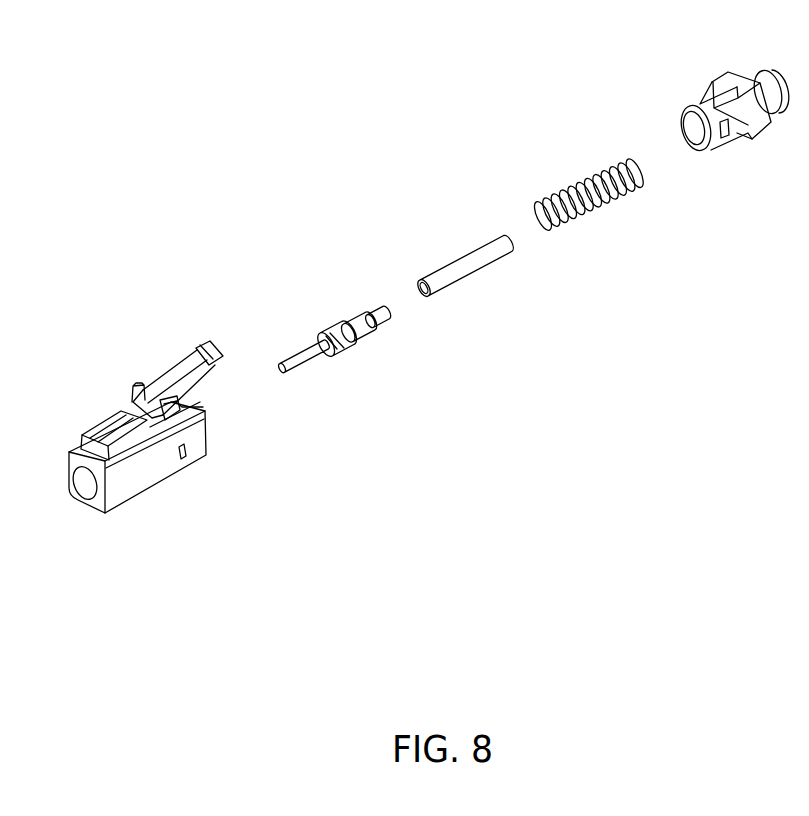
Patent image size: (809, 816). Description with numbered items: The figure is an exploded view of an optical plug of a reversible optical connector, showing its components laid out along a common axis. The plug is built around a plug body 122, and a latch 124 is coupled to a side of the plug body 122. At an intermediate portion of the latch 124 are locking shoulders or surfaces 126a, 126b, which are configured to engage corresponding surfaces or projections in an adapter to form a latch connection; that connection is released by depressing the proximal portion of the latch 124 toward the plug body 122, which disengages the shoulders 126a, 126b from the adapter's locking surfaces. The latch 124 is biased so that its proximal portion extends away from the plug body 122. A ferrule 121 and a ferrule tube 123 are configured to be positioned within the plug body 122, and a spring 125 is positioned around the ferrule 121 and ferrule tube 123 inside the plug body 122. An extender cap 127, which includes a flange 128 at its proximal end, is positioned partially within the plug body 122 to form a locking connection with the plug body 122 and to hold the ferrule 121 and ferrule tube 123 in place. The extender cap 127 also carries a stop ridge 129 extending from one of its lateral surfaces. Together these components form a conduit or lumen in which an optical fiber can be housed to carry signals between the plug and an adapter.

The ferrule 121 is at (302, 312).
The plug body 122 is at (147, 473).
The ferrule tube 123 is at (450, 268).
The latch 124 is at (196, 352).
The spring 125 is at (562, 171).
The locking shoulder 126a is at (134, 388).
The locking shoulder 126b is at (187, 410).
The extender cap 127 is at (684, 123).
The flange 128 is at (747, 75).
The stop ridge 129 is at (742, 138).